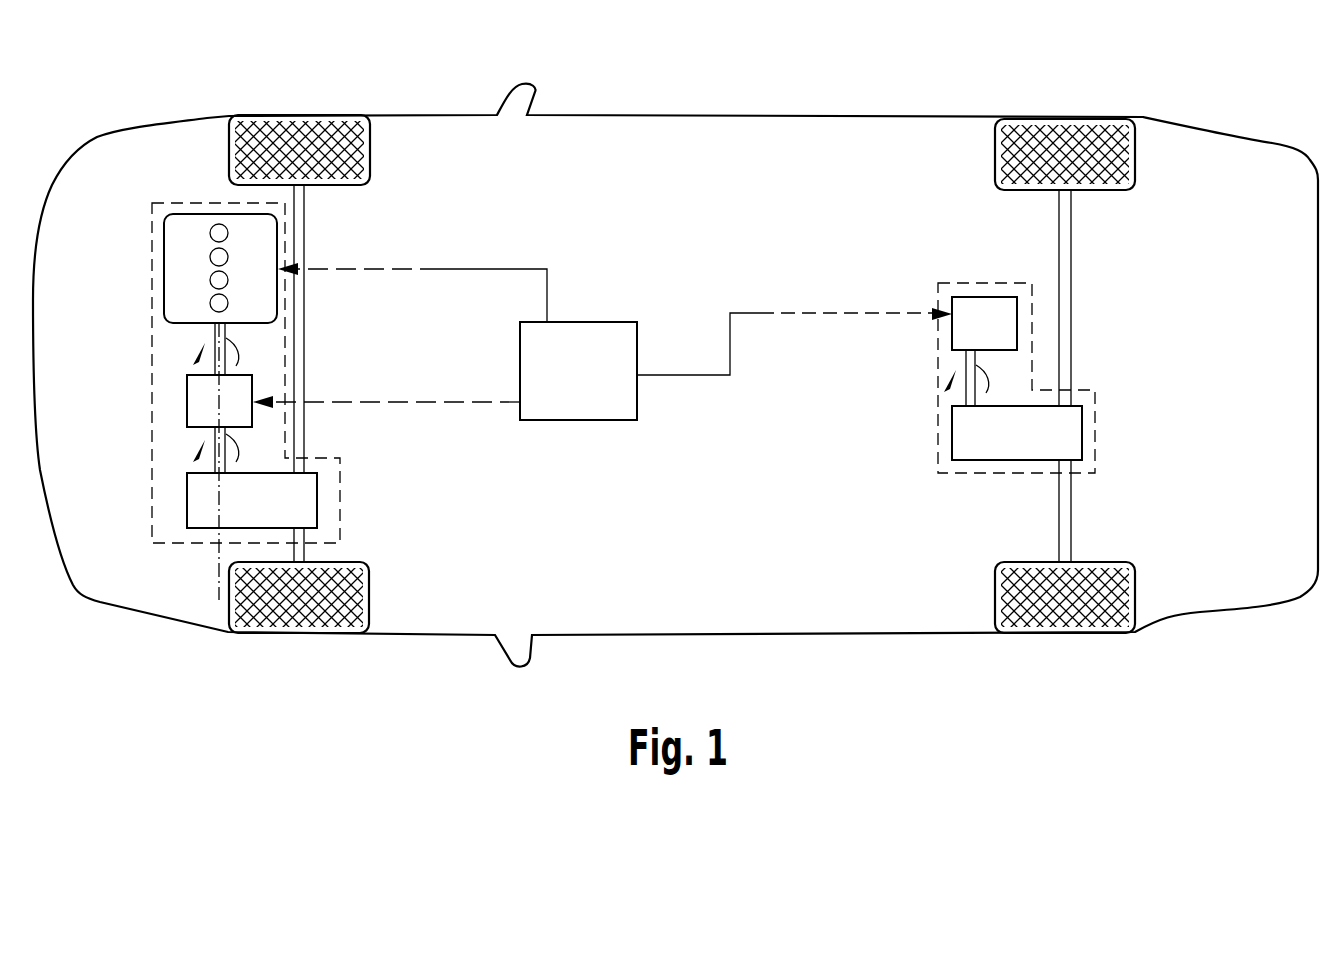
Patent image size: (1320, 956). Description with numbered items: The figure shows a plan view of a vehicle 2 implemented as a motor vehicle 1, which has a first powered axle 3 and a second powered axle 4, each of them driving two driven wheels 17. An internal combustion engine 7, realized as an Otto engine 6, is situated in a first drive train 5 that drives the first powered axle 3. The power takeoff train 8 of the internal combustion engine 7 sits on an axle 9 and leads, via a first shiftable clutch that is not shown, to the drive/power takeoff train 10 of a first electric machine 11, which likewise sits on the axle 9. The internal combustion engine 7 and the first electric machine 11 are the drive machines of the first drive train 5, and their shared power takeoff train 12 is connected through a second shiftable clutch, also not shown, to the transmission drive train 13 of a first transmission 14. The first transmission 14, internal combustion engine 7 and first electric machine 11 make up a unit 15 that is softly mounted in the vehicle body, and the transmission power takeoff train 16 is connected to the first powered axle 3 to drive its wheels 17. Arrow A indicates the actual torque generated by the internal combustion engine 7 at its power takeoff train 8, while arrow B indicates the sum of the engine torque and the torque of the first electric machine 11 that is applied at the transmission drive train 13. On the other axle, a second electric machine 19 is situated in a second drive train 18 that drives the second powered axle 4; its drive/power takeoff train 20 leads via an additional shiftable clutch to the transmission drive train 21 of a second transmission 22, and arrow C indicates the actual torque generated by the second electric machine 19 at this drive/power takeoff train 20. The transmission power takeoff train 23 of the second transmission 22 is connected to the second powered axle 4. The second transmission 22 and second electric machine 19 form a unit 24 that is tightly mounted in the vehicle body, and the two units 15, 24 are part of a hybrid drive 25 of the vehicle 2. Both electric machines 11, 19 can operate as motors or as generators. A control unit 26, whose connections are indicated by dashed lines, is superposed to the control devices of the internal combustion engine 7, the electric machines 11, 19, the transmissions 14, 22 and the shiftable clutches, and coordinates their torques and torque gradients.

The motor vehicle 1 is at (675, 349).
The vehicle 2 is at (683, 115).
The first powered axle 3 is at (307, 233).
The second powered axle 4 is at (1073, 240).
The first drive train 5 is at (183, 176).
The Otto engine 6 is at (179, 261).
The internal combustion engine 7 is at (182, 237).
The power takeoff train 8 is at (213, 333).
The axle 9 is at (215, 562).
The drive/power takeoff train 10 is at (212, 370).
The first electric machine 11 is at (233, 389).
The shared power takeoff train 12 is at (212, 436).
The transmission drive train 13 is at (212, 466).
The first transmission 14 is at (293, 503).
The unit 15 is at (152, 283).
The transmission power takeoff train 16 is at (307, 444).
The driven wheels 17 is at (302, 138).
The second drive train 18 is at (952, 256).
The second electric machine 19 is at (984, 323).
The drive/power takeoff train 20 is at (965, 358).
The transmission drive train 21 is at (965, 397).
The second transmission 22 is at (1017, 433).
The transmission power takeoff train 23 is at (1073, 383).
The unit 24 is at (938, 445).
The hybrid drive 25 is at (1182, 320).
The control unit 26 is at (602, 341).
The arrow A is at (200, 357).
The arrow B is at (200, 455).
The arrow C is at (957, 372).